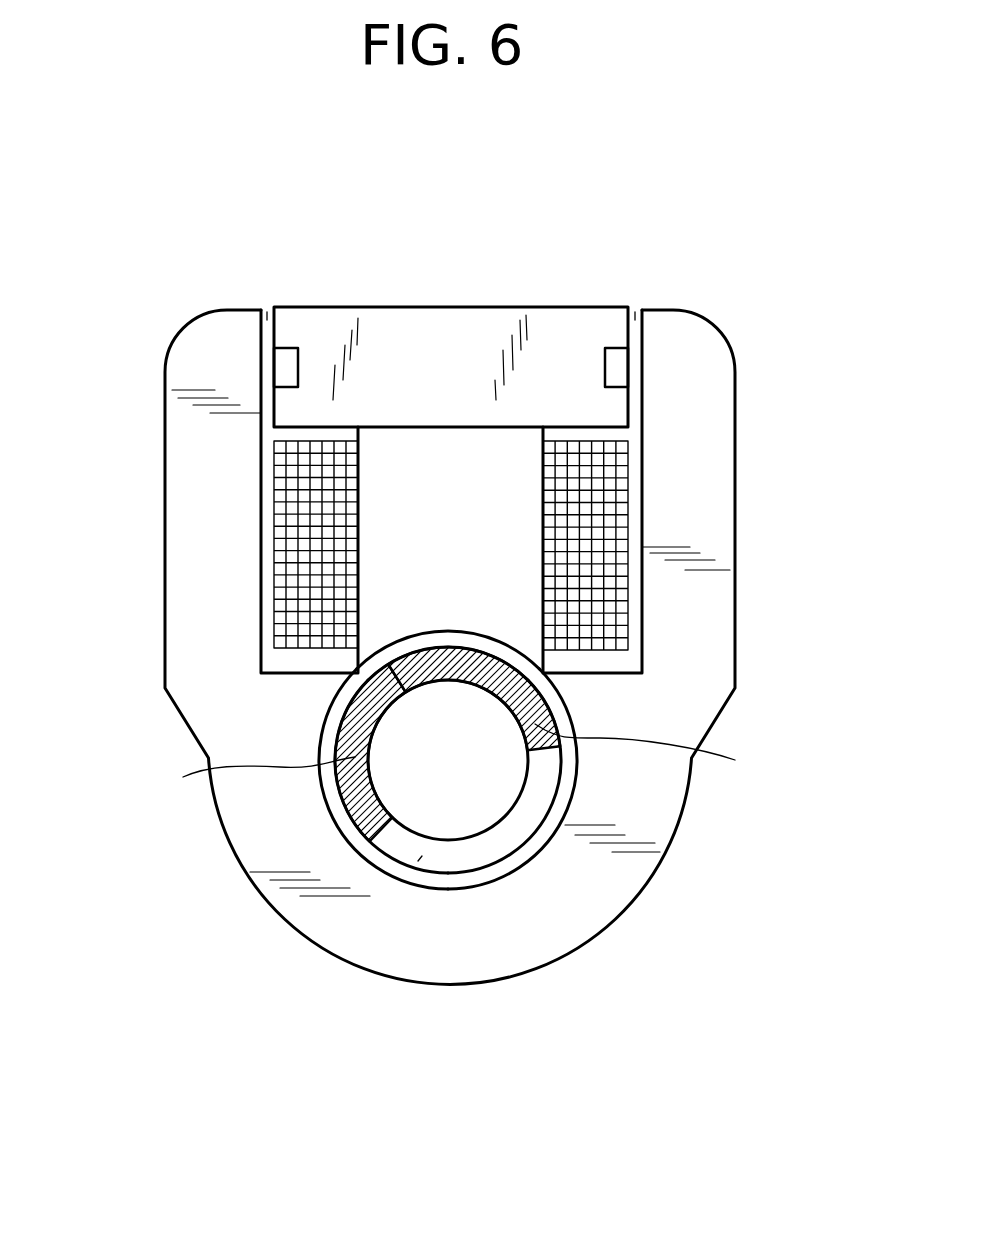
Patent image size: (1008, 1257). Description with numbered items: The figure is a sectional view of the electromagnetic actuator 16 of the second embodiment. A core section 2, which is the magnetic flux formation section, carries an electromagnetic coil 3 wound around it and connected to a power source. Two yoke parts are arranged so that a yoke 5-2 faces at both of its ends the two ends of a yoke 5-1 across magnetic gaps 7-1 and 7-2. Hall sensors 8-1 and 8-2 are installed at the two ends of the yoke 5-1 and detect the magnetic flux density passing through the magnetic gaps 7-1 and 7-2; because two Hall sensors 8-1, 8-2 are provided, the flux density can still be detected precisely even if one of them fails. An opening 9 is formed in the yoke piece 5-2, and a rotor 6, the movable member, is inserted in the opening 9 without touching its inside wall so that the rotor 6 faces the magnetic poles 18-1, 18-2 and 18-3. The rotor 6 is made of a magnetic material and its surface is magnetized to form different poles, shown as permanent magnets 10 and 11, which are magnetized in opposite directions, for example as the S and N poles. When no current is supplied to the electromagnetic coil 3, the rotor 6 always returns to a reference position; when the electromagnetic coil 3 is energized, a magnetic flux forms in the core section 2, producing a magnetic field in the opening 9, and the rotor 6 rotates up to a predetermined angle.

The core section 2 is at (387, 495).
The electromagnetic coil 3 is at (597, 518).
The yoke 5-1 is at (532, 372).
The yoke 5-2 is at (715, 403).
The rotor 6 is at (465, 788).
The magnetic gap 7-1 is at (266, 318).
The magnetic gap 7-2 is at (635, 318).
The Hall sensor 8-1 is at (283, 368).
The Hall sensor 8-2 is at (627, 373).
The opening 9 is at (420, 858).
The permanent magnet 10 is at (362, 803).
The permanent magnet 11 is at (545, 748).
The electromagnetic actuator 16 is at (768, 355).
The magnetic pole 18-1 is at (333, 691).
The magnetic pole 18-2 is at (572, 695).
The magnetic pole 18-3 is at (436, 620).